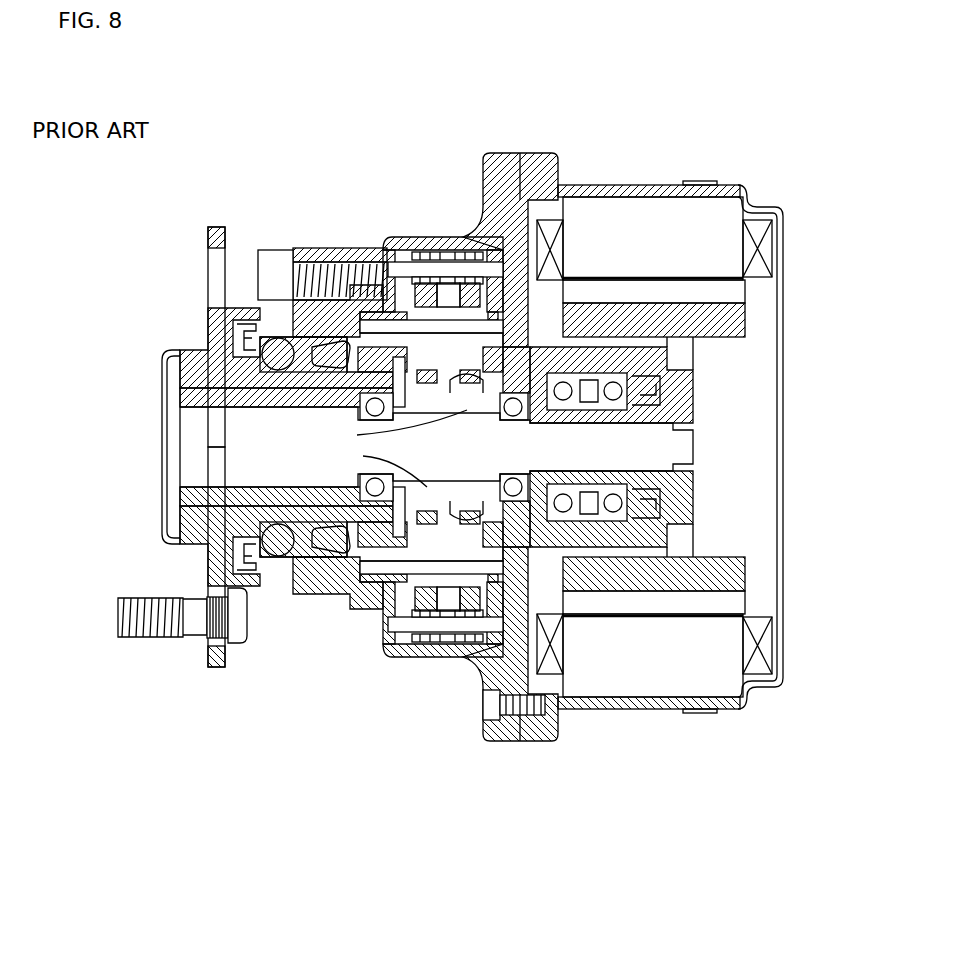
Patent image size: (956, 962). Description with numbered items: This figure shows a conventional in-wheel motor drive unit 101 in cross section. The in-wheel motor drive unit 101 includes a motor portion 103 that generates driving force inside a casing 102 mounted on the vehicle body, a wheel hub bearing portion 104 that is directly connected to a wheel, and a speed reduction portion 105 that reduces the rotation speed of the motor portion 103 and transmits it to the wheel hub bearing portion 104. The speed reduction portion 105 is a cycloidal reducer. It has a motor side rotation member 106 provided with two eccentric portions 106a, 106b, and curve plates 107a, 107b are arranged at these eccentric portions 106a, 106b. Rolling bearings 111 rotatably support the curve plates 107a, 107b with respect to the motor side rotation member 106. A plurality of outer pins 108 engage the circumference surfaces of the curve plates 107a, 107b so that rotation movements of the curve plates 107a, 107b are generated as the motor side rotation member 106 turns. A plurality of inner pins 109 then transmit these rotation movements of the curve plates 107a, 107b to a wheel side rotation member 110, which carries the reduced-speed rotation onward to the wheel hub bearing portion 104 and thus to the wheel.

The in-wheel motor drive unit 101 is at (280, 110).
The casing 102 is at (512, 145).
The motor portion 103 is at (795, 857).
The wheel hub bearing portion 104 is at (334, 857).
The speed reduction portion 105 is at (453, 857).
The motor side rotation member 106 is at (633, 443).
The eccentric portion 106a is at (357, 433).
The eccentric portion 106b is at (363, 455).
The curve plate 107a is at (467, 615).
The curve plate 107b is at (383, 243).
The outer pins 108 is at (468, 265).
The inner pins 109 is at (432, 332).
The wheel side rotation member 110 is at (190, 404).
The rolling bearings 111 is at (527, 337).